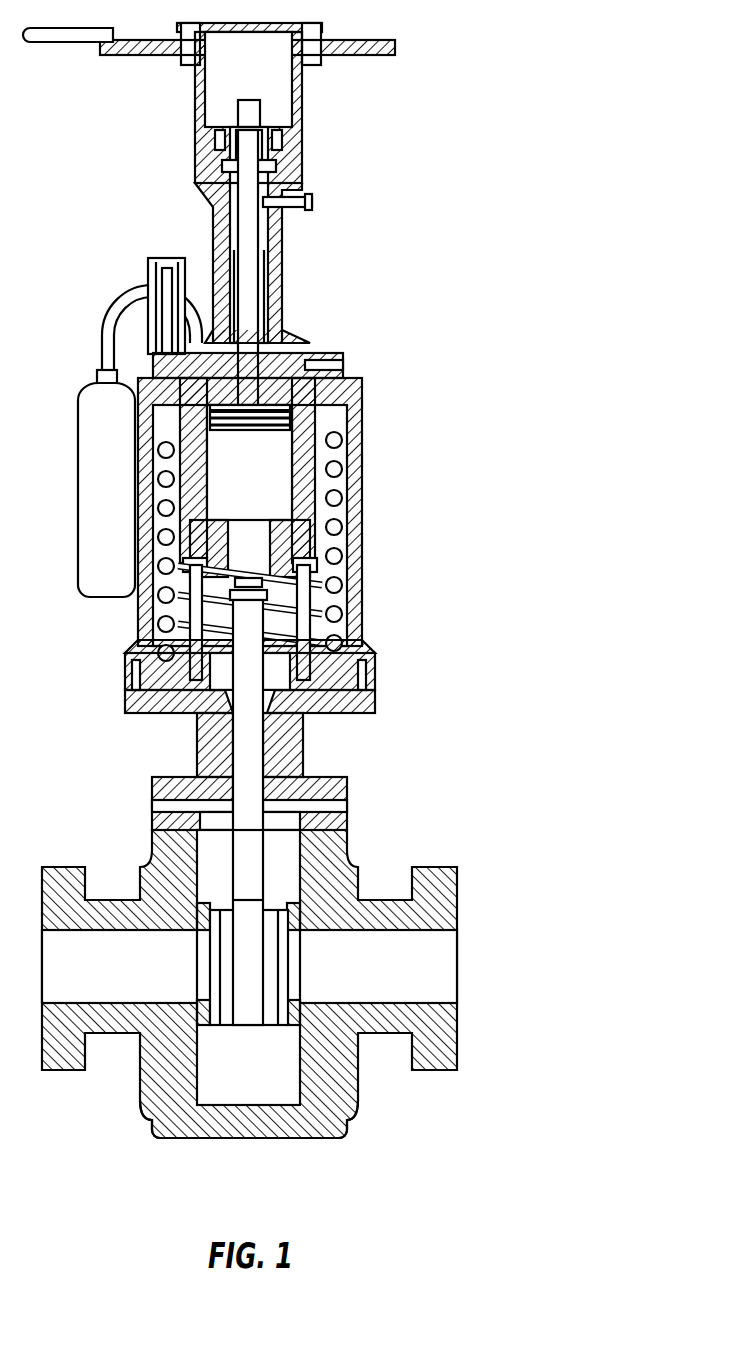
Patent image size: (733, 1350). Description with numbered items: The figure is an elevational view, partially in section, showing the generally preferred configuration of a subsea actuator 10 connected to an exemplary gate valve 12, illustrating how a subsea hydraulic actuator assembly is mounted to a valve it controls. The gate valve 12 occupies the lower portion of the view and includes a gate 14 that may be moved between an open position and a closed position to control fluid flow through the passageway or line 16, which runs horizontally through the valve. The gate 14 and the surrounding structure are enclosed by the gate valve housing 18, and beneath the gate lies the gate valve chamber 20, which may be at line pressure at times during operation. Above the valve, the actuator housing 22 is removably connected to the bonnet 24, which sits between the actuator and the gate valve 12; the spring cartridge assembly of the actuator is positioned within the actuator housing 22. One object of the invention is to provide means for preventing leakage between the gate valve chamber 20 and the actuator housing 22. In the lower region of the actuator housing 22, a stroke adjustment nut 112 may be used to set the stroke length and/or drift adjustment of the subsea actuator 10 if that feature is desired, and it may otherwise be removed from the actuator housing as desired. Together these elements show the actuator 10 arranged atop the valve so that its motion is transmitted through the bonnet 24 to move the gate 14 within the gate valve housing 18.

The subsea actuator 10 is at (328, 616).
The gate valve 12 is at (316, 904).
The gate 14 is at (240, 877).
The passageway or line 16 is at (438, 977).
The gate valve housing 18 is at (157, 1097).
The gate valve chamber 20 is at (227, 1090).
The actuator housing 22 is at (360, 390).
The bonnet 24 is at (347, 780).
The stroke adjustment nut 112 is at (295, 688).